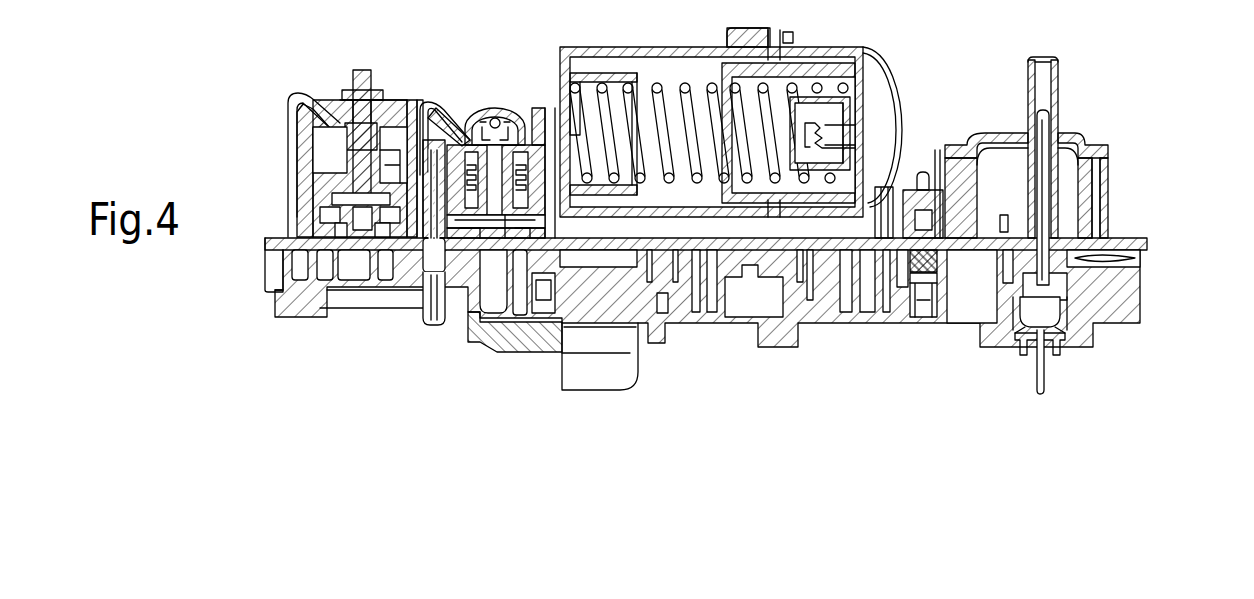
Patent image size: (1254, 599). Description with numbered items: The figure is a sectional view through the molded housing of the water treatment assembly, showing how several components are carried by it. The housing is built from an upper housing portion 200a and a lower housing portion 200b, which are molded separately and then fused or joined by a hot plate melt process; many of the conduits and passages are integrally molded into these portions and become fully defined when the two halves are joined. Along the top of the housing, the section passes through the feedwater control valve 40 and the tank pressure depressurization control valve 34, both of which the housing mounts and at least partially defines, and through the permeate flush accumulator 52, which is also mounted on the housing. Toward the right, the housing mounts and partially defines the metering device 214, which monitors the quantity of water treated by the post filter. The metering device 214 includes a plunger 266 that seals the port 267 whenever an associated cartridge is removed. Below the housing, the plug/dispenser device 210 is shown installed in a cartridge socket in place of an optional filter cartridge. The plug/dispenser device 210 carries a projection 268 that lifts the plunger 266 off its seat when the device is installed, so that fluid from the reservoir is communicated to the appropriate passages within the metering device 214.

The feedwater (FW) control valve 40 is at (325, 74).
The tank pressure depressurization (TP) control valve 34 is at (492, 86).
The permeate flush accumulator 52 is at (880, 45).
The metering device 214 is at (1095, 104).
The plunger 266 is at (1045, 215).
The upper housing portion 200a is at (1122, 233).
The port 267 is at (1143, 263).
The lower housing portion 200b is at (1122, 305).
The projection 268 is at (1075, 342).
The plug/dispenser device 210 is at (620, 368).